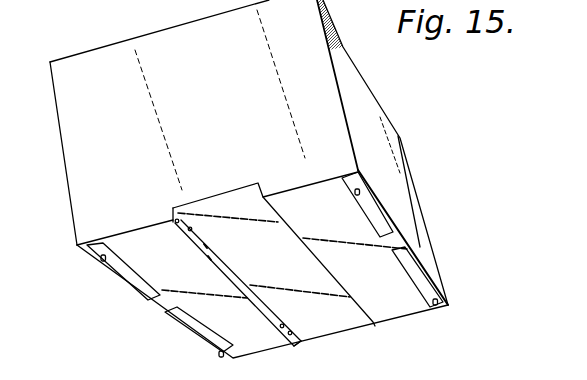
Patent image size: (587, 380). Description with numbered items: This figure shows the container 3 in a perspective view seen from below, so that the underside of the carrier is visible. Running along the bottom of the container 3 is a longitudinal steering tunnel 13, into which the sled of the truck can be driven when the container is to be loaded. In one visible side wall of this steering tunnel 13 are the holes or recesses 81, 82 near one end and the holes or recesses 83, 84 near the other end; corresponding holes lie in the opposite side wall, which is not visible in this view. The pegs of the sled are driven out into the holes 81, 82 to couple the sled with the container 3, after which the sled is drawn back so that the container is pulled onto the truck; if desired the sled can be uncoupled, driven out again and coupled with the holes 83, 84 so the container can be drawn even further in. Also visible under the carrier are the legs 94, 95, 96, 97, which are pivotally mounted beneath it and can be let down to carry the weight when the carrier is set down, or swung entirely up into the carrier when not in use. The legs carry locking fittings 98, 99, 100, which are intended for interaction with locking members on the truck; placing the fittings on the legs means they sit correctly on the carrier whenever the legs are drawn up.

The container 3 is at (117, 55).
The longitudinal steering tunnel 13 is at (225, 203).
The hole 81 is at (172, 211).
The hole 82 is at (183, 234).
The hole 83 is at (280, 328).
The hole 84 is at (302, 342).
The leg 94 is at (120, 270).
The leg 95 is at (193, 333).
The leg 96 is at (361, 177).
The leg 97 is at (418, 278).
The locking fitting 98 is at (100, 263).
The locking fitting 99 is at (218, 359).
The locking fitting 100 is at (361, 192).